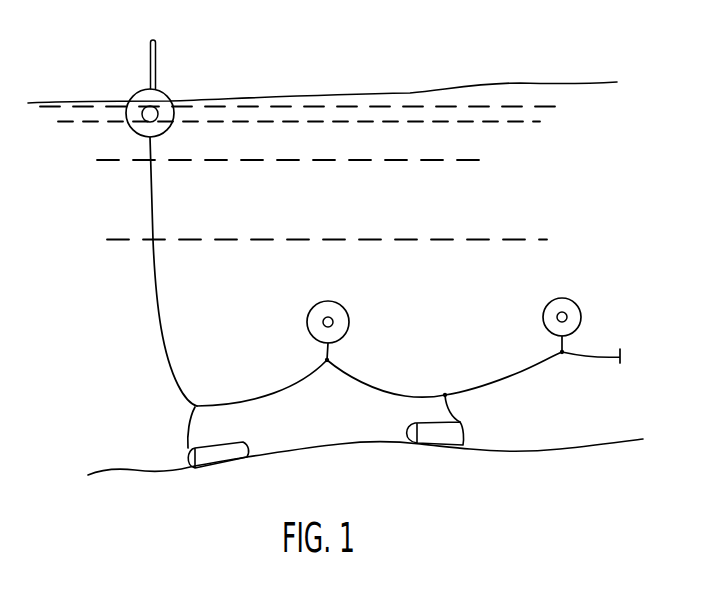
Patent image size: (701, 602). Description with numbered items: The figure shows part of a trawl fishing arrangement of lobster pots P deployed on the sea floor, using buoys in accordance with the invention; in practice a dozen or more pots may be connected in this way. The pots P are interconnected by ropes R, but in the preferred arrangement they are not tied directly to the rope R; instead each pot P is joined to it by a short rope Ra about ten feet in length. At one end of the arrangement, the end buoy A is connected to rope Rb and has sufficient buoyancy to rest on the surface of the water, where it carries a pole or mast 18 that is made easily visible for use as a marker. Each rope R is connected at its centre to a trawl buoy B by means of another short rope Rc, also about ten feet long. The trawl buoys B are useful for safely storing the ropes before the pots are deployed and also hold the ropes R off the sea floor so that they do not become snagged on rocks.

The pole or mast 18 is at (157, 58).
The end buoy A is at (182, 79).
The rope Rb is at (157, 272).
The rope R is at (243, 401).
The short rope Ra is at (191, 420).
The lobster pot P is at (247, 443).
The trawl buoy B is at (343, 303).
The short rope Rc is at (332, 348).